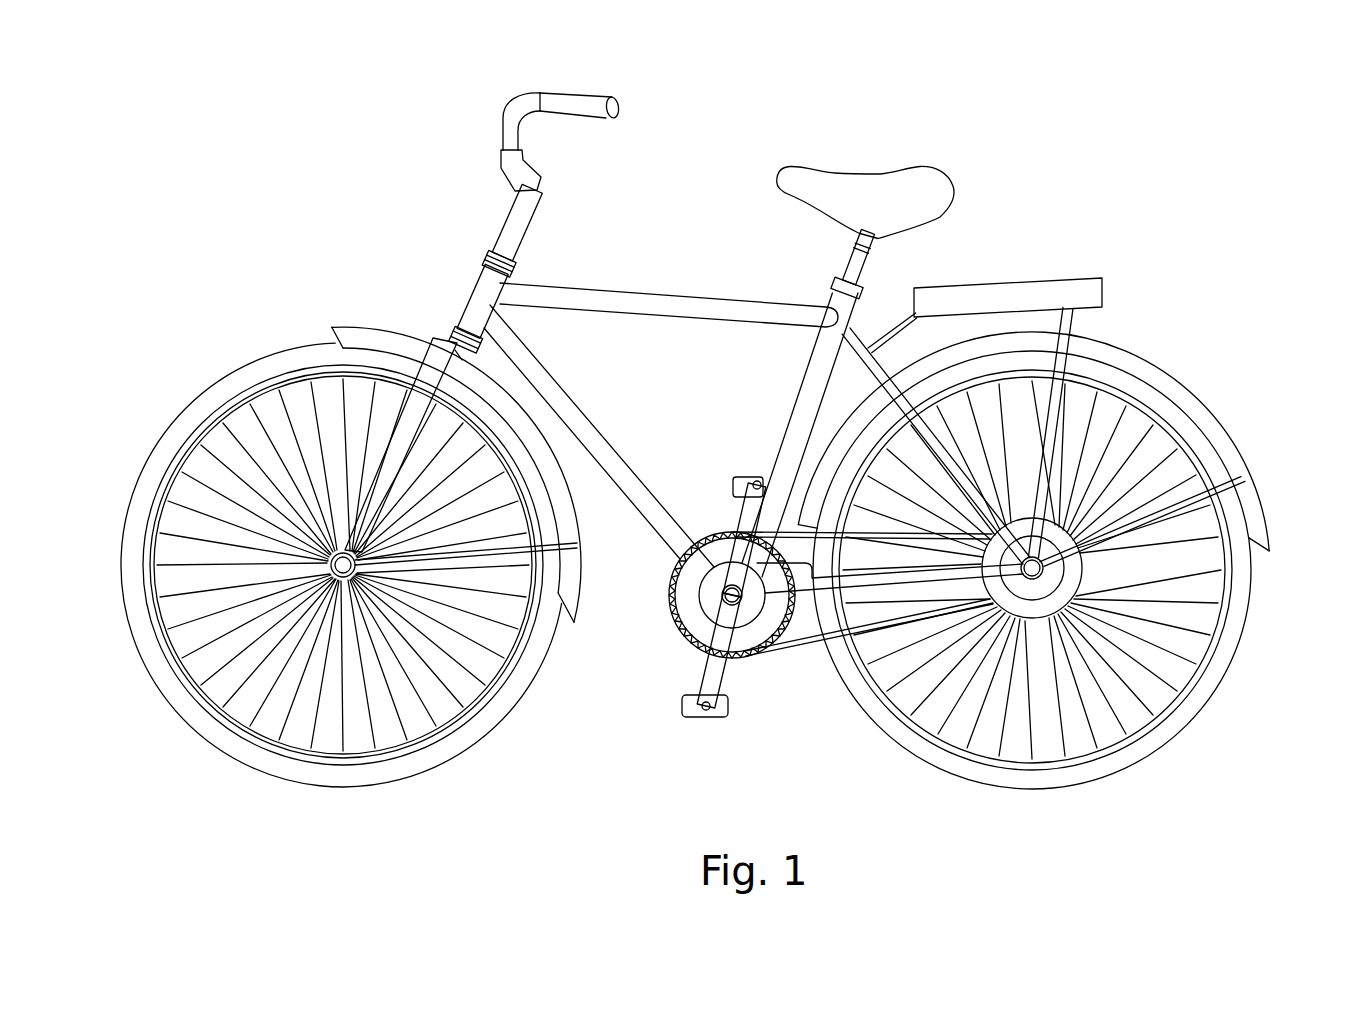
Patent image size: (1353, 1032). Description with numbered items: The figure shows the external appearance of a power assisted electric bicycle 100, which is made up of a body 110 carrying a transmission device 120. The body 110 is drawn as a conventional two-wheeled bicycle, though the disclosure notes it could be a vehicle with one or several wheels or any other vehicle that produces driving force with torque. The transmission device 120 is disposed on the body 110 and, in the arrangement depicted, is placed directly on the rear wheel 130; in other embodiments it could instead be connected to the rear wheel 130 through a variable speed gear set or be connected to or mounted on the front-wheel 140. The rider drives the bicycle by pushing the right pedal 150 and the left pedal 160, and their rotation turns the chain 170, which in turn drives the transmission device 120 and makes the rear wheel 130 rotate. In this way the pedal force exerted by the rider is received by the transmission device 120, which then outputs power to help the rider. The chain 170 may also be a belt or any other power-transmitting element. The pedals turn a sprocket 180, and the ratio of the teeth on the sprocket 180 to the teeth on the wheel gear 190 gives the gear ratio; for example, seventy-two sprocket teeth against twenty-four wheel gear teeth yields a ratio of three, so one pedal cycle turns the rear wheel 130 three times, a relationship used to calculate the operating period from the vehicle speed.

The power assisted electric bicycle 100 is at (122, 136).
The body 110 is at (485, 305).
The transmission device 120 is at (1039, 587).
The rear wheel 130 is at (1223, 587).
The front-wheel 140 is at (232, 398).
The right pedal 150 is at (745, 476).
The left pedal 160 is at (700, 718).
The chain 170 is at (681, 630).
The sprocket 180 is at (690, 580).
The wheel gear 190 is at (1078, 570).